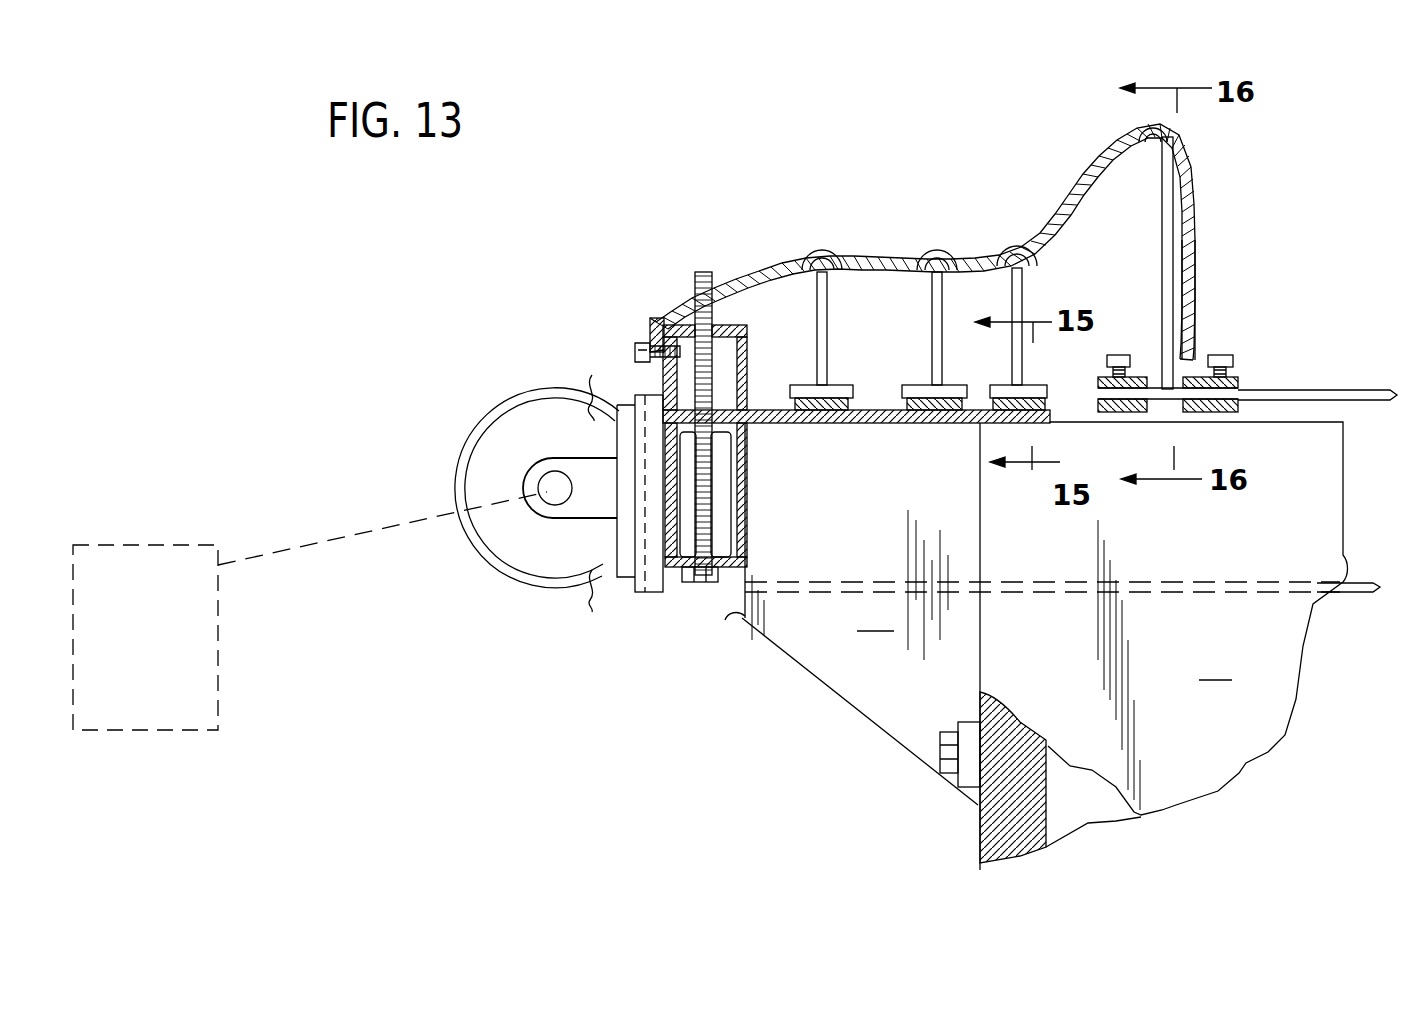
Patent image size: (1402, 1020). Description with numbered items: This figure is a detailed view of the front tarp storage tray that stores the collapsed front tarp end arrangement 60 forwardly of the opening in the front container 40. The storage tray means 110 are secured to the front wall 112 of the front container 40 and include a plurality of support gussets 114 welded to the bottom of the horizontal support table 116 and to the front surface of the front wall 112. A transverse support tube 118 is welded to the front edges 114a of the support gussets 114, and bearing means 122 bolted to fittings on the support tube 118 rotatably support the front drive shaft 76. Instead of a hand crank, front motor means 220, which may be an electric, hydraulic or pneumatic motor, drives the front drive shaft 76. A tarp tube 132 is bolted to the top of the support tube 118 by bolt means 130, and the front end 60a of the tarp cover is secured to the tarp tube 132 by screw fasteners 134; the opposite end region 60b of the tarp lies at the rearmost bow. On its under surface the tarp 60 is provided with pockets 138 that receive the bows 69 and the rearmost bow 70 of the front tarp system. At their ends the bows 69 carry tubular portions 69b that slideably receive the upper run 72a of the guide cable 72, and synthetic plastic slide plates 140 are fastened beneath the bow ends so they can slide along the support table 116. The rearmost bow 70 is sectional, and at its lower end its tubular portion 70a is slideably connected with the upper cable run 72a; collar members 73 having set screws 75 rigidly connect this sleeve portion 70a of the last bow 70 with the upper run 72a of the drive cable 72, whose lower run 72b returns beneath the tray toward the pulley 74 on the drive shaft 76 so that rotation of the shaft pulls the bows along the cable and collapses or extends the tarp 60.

The front container 40 is at (1046, 646).
The front tarp end arrangement 60 is at (1046, 198).
The front end of the tarp cover 60a is at (652, 328).
The belt second end 60b is at (1197, 277).
The bows 69 is at (826, 327).
The tubular portion 69b is at (953, 387).
The rearmost bow 70 is at (1172, 212).
The tubular portion of rearmost bow 70a is at (1197, 421).
The guide cable 72 is at (474, 417).
The upper run of the guide cable 72a is at (1345, 390).
The shaft 72b is at (1345, 595).
The collar members 73 is at (1120, 380).
The pulley wheel 74 is at (507, 533).
The set screws 75 is at (1222, 353).
The front drive shaft 76 is at (530, 481).
The storage tray means 110 is at (832, 704).
The front wall 112 is at (980, 840).
The support gussets 114 is at (824, 527).
The front edges of the support gussets 114a is at (726, 622).
The horizontal support table 116 is at (877, 410).
The transverse support tube 118 is at (677, 590).
The bearing means 122 is at (580, 502).
The bolt means 130 is at (703, 270).
The tarp tube 132 is at (757, 333).
The screw fasteners 134 is at (633, 350).
The pockets 138 is at (920, 250).
The slide plates 140 is at (827, 425).
The front motor means 220 is at (218, 707).